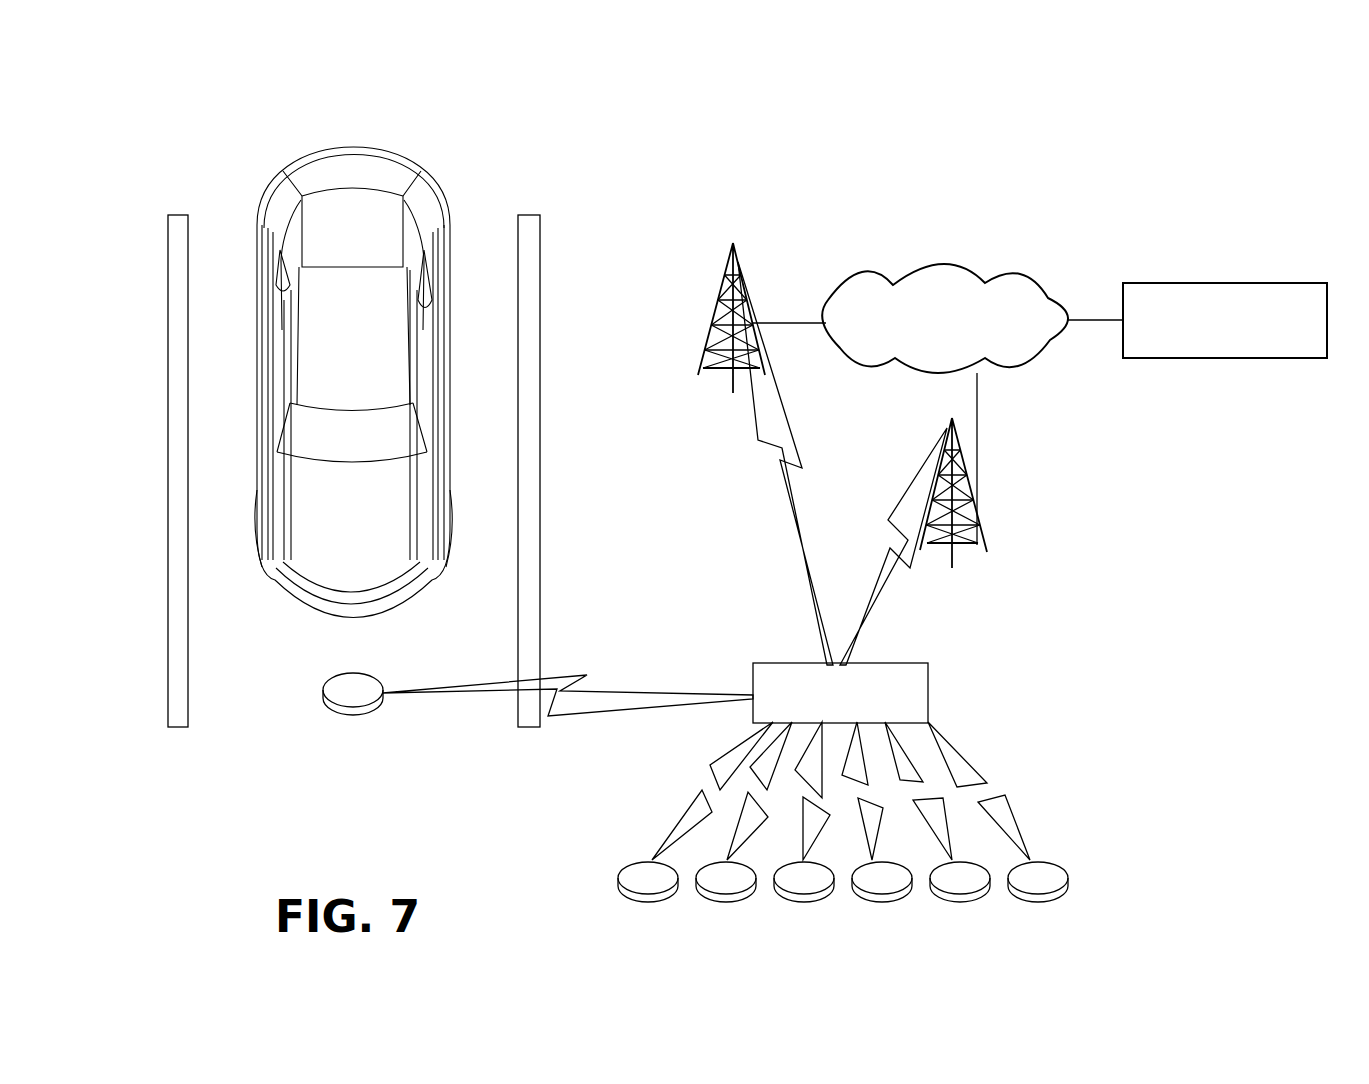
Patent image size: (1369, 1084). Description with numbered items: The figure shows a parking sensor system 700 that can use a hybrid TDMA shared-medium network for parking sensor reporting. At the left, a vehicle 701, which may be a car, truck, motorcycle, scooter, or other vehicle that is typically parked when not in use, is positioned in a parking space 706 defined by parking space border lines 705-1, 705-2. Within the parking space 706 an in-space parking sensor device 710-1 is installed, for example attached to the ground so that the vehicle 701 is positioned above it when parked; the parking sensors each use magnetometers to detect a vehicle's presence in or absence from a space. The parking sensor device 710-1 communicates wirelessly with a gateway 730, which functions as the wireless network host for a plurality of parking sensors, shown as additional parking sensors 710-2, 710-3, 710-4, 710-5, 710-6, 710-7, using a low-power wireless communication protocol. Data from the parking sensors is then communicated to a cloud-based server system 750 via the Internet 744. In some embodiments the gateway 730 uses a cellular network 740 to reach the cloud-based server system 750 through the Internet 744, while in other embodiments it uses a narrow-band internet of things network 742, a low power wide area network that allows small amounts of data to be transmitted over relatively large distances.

The parking sensor system 700 is at (127, 94).
The vehicle 701 is at (268, 178).
The parking space border line 705-1 is at (168, 215).
The parking space border line 705-2 is at (540, 215).
The parking space 706 is at (192, 328).
The parking sensor device 710-1 is at (357, 712).
The parking sensor 710-2 is at (652, 896).
The parking sensor 710-3 is at (728, 896).
The parking sensor 710-4 is at (818, 896).
The parking sensor 710-5 is at (895, 896).
The parking sensor 710-6 is at (975, 896).
The parking sensor 710-7 is at (1055, 896).
The gateway 730 is at (767, 663).
The cellular network 740 is at (742, 268).
The NB-IoT network 742 is at (985, 540).
The Internet 744 is at (996, 272).
The cloud-based server system 750 is at (1124, 288).